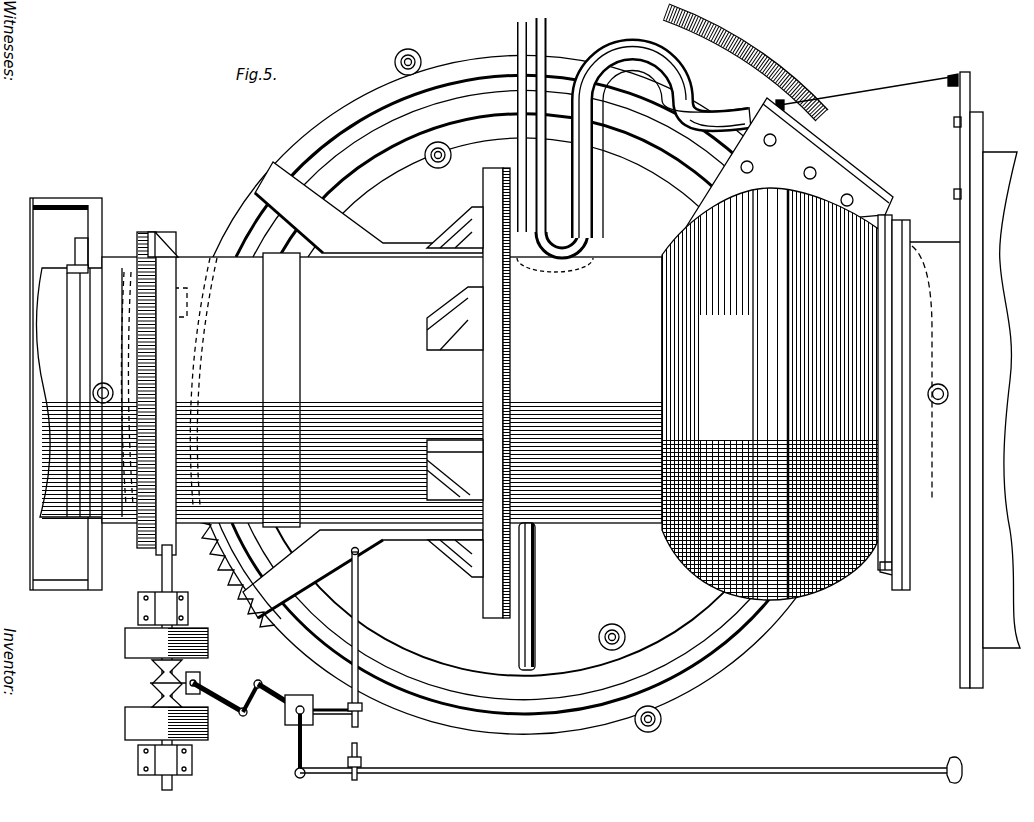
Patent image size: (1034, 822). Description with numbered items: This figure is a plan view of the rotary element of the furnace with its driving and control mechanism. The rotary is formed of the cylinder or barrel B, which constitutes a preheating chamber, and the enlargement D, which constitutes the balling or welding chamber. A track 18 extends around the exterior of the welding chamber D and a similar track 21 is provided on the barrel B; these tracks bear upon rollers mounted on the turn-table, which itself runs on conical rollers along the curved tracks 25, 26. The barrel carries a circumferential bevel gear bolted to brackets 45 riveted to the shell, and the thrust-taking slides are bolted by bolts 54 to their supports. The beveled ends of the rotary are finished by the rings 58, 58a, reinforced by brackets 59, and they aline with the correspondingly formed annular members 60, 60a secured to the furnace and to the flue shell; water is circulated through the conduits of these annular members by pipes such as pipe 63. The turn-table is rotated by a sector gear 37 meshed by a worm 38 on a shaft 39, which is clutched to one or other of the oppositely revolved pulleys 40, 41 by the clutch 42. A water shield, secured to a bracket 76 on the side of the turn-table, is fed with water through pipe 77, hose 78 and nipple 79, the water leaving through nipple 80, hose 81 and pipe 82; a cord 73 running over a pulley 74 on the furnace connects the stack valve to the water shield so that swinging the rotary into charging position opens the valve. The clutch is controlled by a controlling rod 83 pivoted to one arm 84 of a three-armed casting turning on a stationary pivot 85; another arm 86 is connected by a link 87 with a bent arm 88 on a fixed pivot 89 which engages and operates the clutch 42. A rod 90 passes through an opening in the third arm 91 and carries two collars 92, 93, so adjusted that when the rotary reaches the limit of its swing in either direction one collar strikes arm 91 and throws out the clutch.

The track 18 is at (792, 444).
The track 21 is at (300, 383).
The curved track 25 is at (472, 66).
The curved track 26 is at (690, 680).
The sector gear 37 is at (256, 604).
The worm 38 is at (130, 380).
The shaft 39 is at (163, 562).
The pulley 40 is at (128, 633).
The pulley 41 is at (130, 716).
The clutch 42 is at (150, 684).
The brackets 45 is at (452, 318).
The bolts 54 is at (1002, 270).
The ring 58 is at (902, 564).
The ring 58a is at (149, 236).
The brackets 59 is at (170, 250).
The annular member 60 is at (938, 250).
The annular member 60a is at (111, 262).
The pipe 63 is at (104, 404).
The cord or cable 73 is at (500, 304).
The pulley 74 is at (953, 72).
The bracket 76 is at (700, 200).
The pipe 77 is at (520, 62).
The hose 78 is at (596, 200).
The nipple 79 is at (772, 106).
The nipple 80 is at (730, 94).
The hose 81 is at (628, 44).
The pipe 82 is at (548, 46).
The controlling rod 83 is at (662, 766).
The arm 84 is at (298, 745).
The stationary pivot 85 is at (302, 704).
The arm 86 is at (280, 700).
The link 87 is at (250, 700).
The bent arm 88 is at (220, 690).
The fixed pivot 89 is at (196, 680).
The rod 90 is at (360, 602).
The third arm 91 is at (333, 716).
The collar 92 is at (332, 698).
The collar 93 is at (362, 760).
The rotary cylinder or barrel B is at (571, 357).
The enlargement constituting a balling or welding chamber D is at (822, 387).